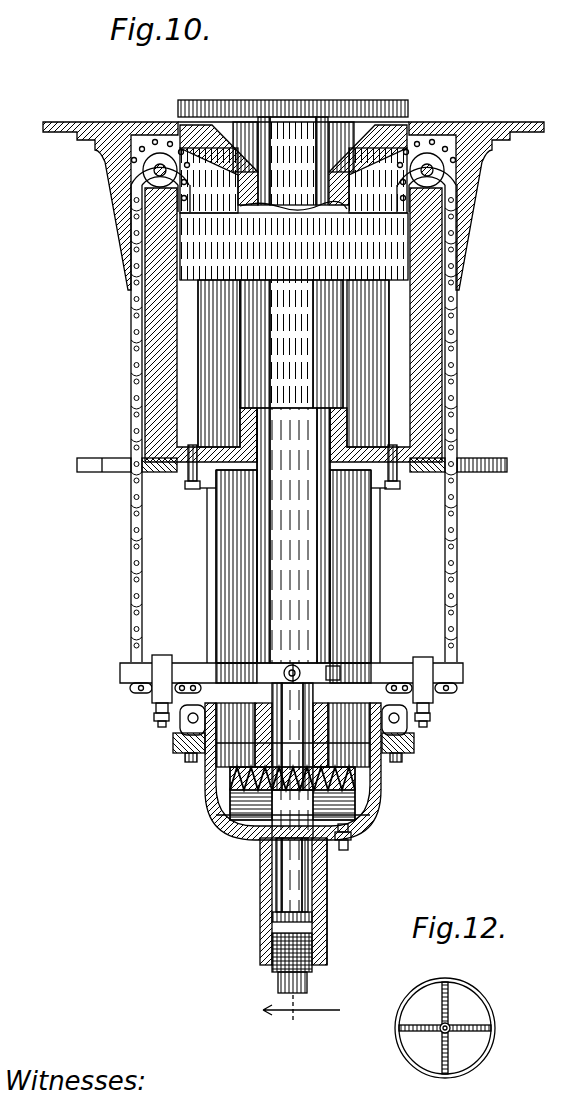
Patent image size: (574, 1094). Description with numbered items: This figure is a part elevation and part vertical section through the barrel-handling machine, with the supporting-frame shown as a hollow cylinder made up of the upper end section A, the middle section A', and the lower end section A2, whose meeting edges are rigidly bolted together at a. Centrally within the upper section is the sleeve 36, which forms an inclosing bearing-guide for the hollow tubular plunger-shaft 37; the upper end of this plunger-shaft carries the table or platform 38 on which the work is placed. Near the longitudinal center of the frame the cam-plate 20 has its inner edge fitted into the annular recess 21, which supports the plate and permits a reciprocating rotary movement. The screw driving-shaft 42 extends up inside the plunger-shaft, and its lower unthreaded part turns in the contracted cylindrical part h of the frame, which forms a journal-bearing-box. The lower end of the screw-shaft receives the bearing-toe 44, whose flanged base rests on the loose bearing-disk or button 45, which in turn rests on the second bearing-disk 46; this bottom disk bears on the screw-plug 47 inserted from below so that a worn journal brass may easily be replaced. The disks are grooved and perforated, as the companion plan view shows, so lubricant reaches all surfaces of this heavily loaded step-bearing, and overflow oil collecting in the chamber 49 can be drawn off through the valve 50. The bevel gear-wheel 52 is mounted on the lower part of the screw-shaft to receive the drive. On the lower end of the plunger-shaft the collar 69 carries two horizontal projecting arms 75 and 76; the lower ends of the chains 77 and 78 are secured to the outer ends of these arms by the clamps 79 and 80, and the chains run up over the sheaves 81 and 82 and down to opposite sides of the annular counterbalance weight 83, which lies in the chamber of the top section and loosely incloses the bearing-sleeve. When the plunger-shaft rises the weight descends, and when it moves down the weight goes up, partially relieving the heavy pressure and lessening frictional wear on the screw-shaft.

In FIG. 10, the table or platform 38 is at (293, 97).
In FIG. 10, the upper end section A is at (293, 292).
In FIG. 10, the sheave 81 is at (143, 170).
In FIG. 10, the sheave 82 is at (447, 170).
In FIG. 10, the hollow tubular plunger-shaft 37 is at (293, 390).
In FIG. 10, the annular counterbalance weight 83 is at (294, 246).
In FIG. 10, the sleeve 36 is at (293, 363).
In FIG. 10, the cam-plate 20 is at (77, 464).
In FIG. 10, the annular recess 21 is at (186, 474).
In FIG. 10, the bolts a is at (193, 490).
In FIG. 10, the middle section A' is at (292, 566).
In FIG. 10, the chain 77 is at (133, 618).
In FIG. 10, the chain 78 is at (462, 618).
In FIG. 10, the clamp 79 is at (162, 668).
In FIG. 10, the clamp 80 is at (423, 668).
In FIG. 10, the horizontal projecting arm 76 is at (122, 671).
In FIG. 10, the horizontal projecting arm 75 is at (463, 671).
In FIG. 10, the collar 69 is at (292, 665).
In FIG. 10, the lower end section A2 is at (205, 797).
In FIG. 10, the chamber 49 is at (372, 813).
In FIG. 10, the bevel gear-wheel 52 is at (247, 901).
In FIG. 10, the loose bearing-disk or button 45 is at (322, 921).
In FIG. 10, the contracted cylindrical part h is at (329, 871).
In FIG. 10, the screw driving-shaft 42 is at (292, 882).
In FIG. 10, the bearing-toe 44 is at (278, 915).
In FIG. 10, the second bearing-disk 46 is at (282, 936).
In FIG. 12, the second bearing-disk 46 is at (478, 1010).
In FIG. 10, the screw-plug 47 is at (280, 977).
In FIG. 10, the valve 50 is at (348, 850).